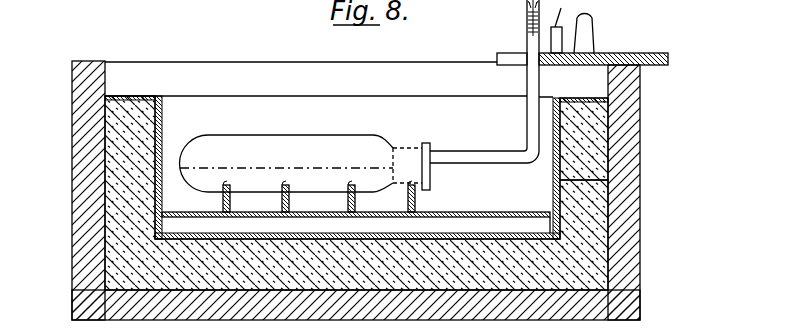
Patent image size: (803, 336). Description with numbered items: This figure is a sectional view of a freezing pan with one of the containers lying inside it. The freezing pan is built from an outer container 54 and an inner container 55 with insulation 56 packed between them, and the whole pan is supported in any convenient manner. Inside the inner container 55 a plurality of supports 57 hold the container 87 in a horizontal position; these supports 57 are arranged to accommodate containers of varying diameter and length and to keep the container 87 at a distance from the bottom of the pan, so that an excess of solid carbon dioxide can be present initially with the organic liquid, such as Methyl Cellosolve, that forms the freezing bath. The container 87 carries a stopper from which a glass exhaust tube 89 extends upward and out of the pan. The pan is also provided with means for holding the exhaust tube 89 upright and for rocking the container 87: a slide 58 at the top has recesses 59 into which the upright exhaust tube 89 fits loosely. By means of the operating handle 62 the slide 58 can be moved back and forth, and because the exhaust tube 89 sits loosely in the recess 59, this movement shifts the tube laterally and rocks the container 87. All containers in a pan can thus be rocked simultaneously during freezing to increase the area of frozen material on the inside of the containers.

The outer container 54 is at (622, 143).
The inner container 55 is at (558, 180).
The insulation 56 is at (592, 217).
The supports 57 is at (415, 200).
The slide 58 is at (663, 52).
The recesses 59 is at (508, 53).
The operating handle 62 is at (592, 14).
The container 87 is at (314, 131).
The glass exhaust tube 89 is at (527, 108).